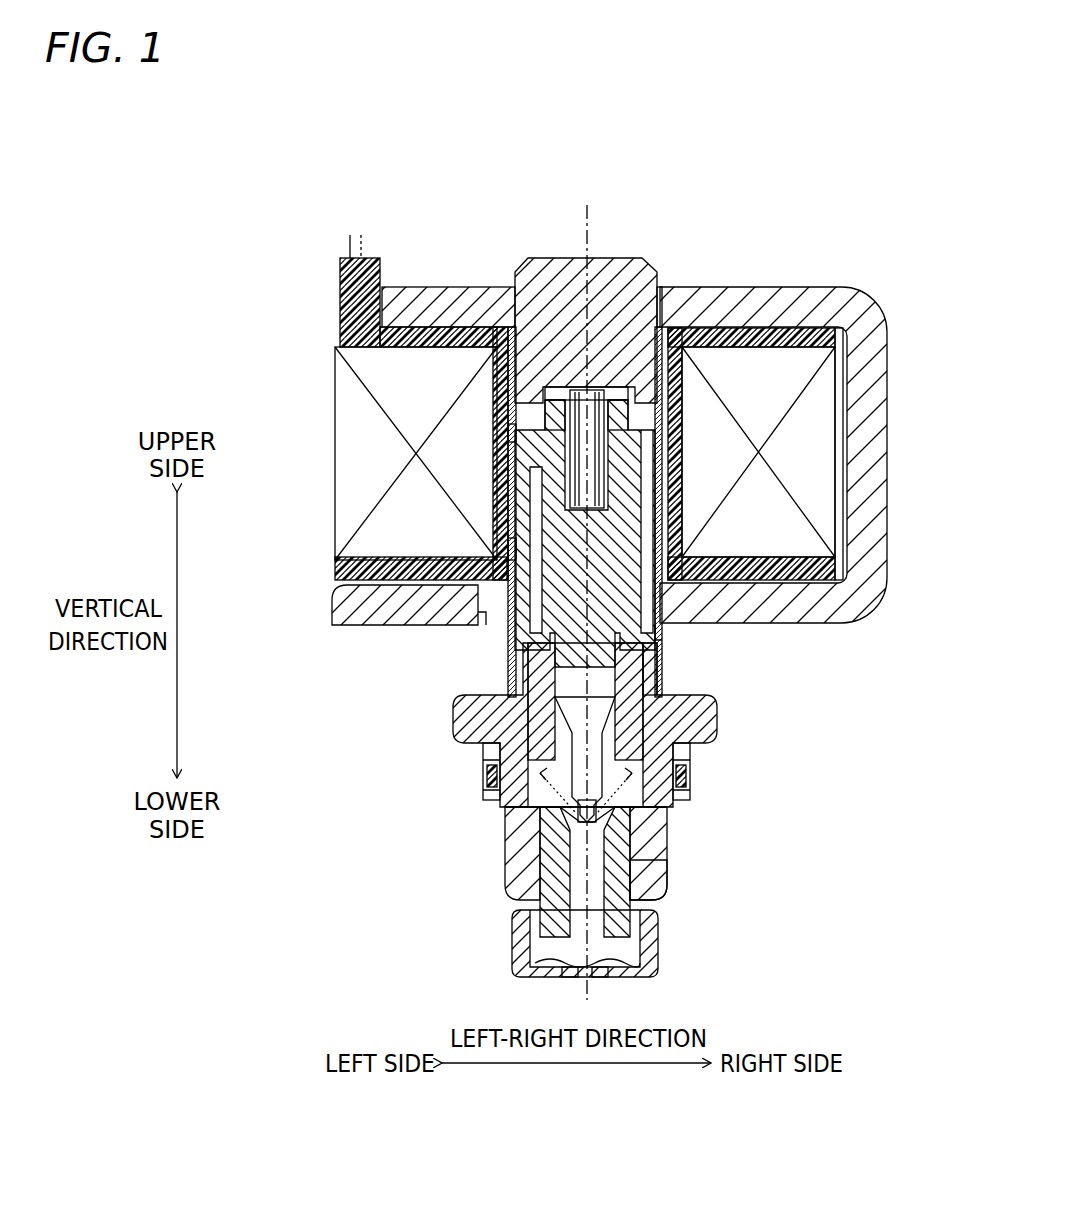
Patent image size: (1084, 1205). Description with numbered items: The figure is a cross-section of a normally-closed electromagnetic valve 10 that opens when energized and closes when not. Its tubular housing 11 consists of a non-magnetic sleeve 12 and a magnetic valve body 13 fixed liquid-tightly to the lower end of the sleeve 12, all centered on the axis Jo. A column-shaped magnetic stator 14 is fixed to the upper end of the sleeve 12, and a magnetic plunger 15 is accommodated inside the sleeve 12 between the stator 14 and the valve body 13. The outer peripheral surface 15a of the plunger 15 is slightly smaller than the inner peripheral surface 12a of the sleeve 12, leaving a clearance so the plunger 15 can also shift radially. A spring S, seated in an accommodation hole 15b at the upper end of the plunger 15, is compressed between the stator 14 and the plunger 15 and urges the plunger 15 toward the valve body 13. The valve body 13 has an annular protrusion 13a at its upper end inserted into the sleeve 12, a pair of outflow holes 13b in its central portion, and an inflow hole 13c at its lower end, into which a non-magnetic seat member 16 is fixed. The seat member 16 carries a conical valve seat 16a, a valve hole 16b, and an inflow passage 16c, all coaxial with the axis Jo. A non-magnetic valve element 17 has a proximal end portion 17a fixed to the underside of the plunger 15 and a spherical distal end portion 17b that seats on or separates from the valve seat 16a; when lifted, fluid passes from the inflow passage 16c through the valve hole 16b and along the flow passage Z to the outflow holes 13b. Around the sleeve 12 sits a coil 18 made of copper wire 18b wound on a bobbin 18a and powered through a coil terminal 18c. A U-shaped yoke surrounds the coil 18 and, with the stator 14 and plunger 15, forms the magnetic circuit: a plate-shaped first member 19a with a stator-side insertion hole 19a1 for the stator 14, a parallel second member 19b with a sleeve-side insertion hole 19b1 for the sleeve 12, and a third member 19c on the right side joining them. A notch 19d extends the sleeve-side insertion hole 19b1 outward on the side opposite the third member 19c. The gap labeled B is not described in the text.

The electromagnetic valve 10 is at (303, 128).
The housing 11 is at (472, 215).
The sleeve 12 is at (520, 660).
The inner peripheral surface 12a is at (517, 508).
The valve body 13 is at (718, 735).
The annular protrusion 13a is at (665, 690).
The outflow hole 13b is at (497, 775).
The inflow hole 13c is at (630, 880).
The stator 14 is at (555, 258).
The plunger 15 is at (663, 518).
The outer peripheral surface 15a is at (508, 545).
The accommodation hole 15b is at (512, 432).
The seat member 16 is at (520, 905).
The valve seat 16a is at (578, 806).
The valve hole 16b is at (555, 852).
The inflow passage 16c is at (605, 918).
The valve element 17 is at (545, 757).
The proximal end portion 17a is at (490, 700).
The distal end portion 17b is at (630, 843).
The coil 18 is at (262, 328).
The bobbin 18a is at (340, 322).
The copper wire 18b is at (340, 382).
The coil terminal 18c is at (345, 247).
The first member 19a is at (448, 287).
The stator-side insertion hole 19a1 is at (665, 290).
The second member 19b is at (332, 602).
The sleeve-side insertion hole 19b1 is at (662, 636).
The third member 19c is at (888, 440).
The notch 19d is at (480, 618).
The gap B is at (577, 462).
The spring S is at (605, 392).
The flow passage Z is at (650, 810).
The axis Jo is at (598, 218).